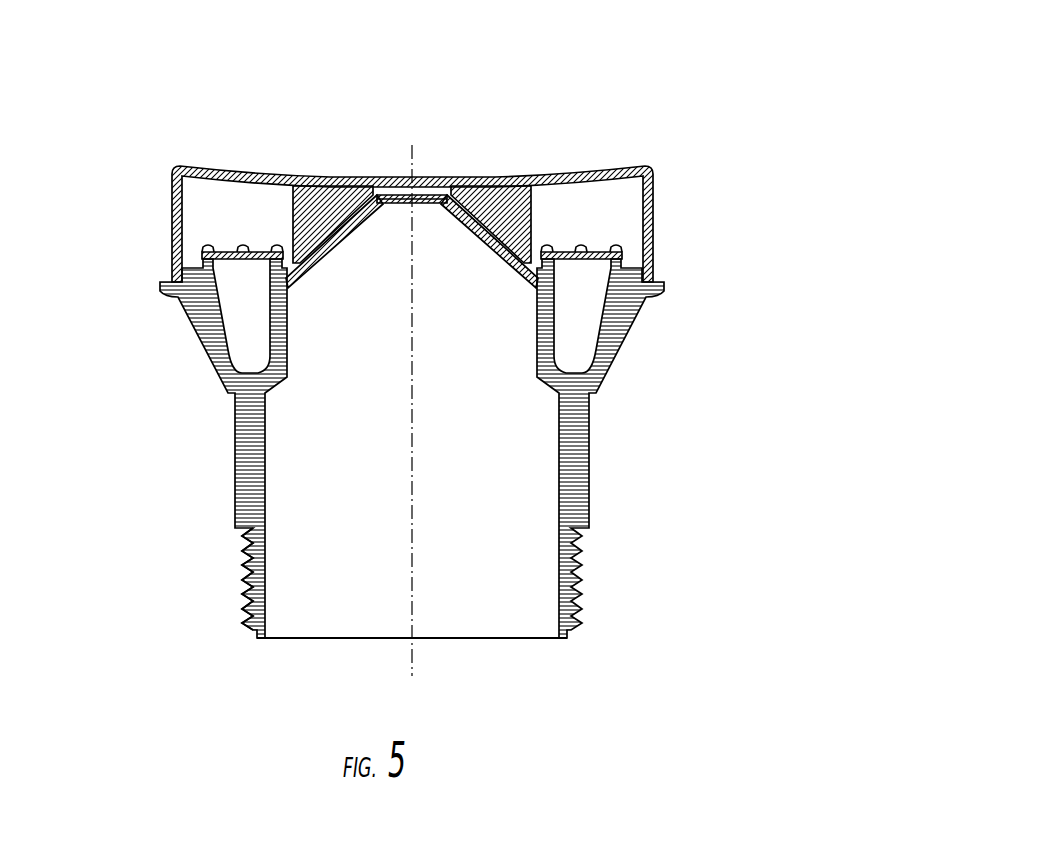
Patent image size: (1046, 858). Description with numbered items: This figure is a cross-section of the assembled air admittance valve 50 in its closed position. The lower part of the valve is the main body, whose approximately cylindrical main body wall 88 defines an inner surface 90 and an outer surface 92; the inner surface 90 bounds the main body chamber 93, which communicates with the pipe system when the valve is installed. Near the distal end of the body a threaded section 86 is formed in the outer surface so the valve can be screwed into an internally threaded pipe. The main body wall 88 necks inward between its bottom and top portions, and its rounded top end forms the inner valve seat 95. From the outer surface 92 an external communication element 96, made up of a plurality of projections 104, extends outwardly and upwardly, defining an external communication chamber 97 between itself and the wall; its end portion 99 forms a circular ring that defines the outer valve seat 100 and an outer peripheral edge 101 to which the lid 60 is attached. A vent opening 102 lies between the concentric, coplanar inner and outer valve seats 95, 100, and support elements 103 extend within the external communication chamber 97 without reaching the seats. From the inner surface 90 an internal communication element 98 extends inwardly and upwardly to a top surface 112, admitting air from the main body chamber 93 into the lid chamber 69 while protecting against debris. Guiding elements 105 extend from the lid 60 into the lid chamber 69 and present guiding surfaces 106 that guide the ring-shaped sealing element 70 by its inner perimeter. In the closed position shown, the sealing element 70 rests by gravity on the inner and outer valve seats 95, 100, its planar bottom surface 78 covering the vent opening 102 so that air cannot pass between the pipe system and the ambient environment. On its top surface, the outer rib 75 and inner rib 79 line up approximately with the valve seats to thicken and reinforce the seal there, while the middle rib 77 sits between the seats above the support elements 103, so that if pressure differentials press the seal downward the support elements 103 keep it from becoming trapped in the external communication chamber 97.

The air admittance valve 50 is at (768, 68).
The lid 60 is at (490, 178).
The lid chamber 69 is at (251, 196).
The sealing element 70 is at (636, 168).
The outer rib 75 is at (652, 200).
The middle rib 77 is at (603, 250).
The bottom surface 78 is at (590, 287).
The inner rib 79 is at (585, 245).
The threaded section 86 is at (248, 577).
The main body wall 88 is at (545, 333).
The inner surface 90 is at (265, 450).
The outer surface 92 is at (235, 445).
The main body chamber 93 is at (464, 543).
The inner valve seat 95 is at (277, 247).
The external communication element 96 is at (170, 307).
The external communication chamber 97 is at (233, 331).
The internal communication element 98 is at (366, 200).
The end portion 99 is at (686, 291).
The outer valve seat 100 is at (242, 258).
The outer peripheral edge 101 is at (163, 280).
The vent opening 102 is at (198, 176).
The support elements 103 is at (620, 255).
The projections 104 is at (617, 332).
The guiding elements 105 is at (314, 195).
The guiding surfaces 106 is at (538, 205).
The top surface 112 is at (432, 197).